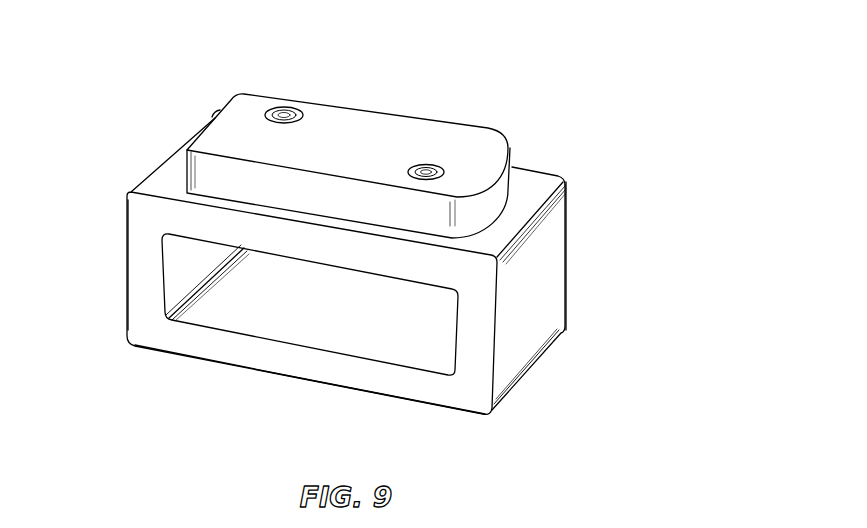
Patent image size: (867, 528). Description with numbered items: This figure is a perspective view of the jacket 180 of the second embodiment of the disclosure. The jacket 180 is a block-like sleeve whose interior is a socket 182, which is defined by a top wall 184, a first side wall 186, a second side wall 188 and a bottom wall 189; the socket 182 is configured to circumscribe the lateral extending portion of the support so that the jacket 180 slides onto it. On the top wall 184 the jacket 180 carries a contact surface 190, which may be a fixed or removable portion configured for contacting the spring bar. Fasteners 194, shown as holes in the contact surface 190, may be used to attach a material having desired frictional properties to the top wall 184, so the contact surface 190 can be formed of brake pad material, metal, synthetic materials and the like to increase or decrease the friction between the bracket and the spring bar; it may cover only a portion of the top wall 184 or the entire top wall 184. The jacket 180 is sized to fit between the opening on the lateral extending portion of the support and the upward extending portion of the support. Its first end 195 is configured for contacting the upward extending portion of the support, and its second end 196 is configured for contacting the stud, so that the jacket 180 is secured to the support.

The jacket 180 is at (395, 84).
The socket 182 is at (267, 327).
The top wall 184 is at (180, 210).
The first side wall 186 is at (140, 277).
The second side wall 188 is at (473, 347).
The bottom wall 189 is at (402, 380).
The contact surface 190 is at (381, 144).
The fasteners 194 is at (438, 167).
The first end 195 is at (198, 343).
The second end 196 is at (568, 247).